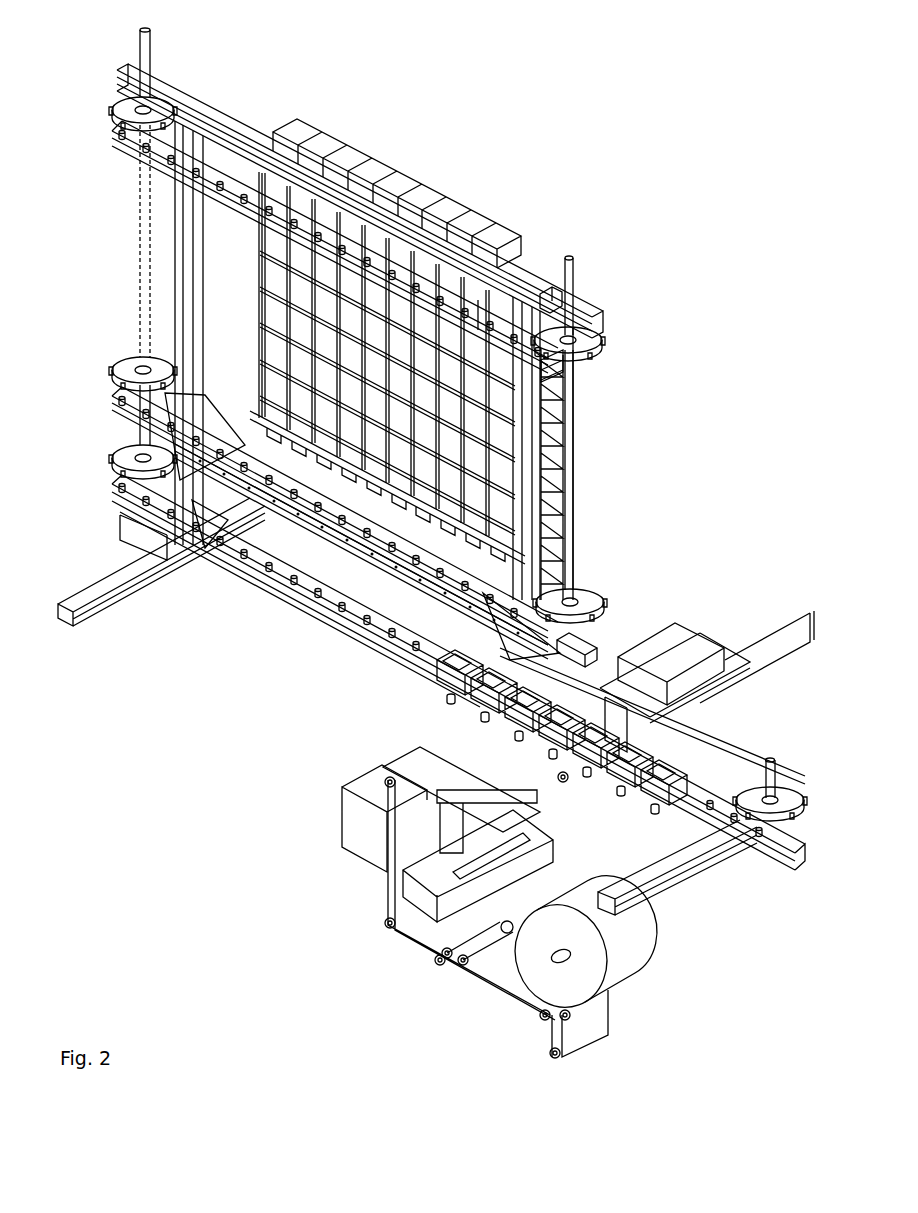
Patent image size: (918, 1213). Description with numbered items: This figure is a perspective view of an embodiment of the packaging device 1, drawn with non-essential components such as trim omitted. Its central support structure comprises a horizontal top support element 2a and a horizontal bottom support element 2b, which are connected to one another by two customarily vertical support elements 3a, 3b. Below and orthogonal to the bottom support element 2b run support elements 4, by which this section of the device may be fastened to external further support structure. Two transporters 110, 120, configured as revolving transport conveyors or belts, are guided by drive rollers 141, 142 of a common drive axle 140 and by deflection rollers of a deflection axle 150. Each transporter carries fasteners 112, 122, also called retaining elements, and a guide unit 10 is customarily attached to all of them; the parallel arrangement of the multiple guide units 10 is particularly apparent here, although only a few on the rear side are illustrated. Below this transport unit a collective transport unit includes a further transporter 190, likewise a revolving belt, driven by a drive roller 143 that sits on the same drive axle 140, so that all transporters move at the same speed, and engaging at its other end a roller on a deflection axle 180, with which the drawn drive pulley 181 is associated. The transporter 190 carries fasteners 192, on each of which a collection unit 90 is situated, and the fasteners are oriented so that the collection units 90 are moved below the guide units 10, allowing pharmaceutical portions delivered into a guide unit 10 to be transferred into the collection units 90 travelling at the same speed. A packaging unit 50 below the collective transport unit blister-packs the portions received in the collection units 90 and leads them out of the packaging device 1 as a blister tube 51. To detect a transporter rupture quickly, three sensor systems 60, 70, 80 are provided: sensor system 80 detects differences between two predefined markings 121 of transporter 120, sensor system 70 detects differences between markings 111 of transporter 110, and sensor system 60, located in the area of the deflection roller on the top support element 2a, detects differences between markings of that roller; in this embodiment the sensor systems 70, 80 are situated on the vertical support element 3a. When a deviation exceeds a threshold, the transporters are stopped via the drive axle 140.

The packaging device 1 is at (670, 144).
The horizontal top support element 2a is at (163, 92).
The horizontal bottom support element 2b is at (313, 610).
The vertical support element 3a is at (533, 481).
The vertical support element 3b is at (185, 147).
The support elements 4 is at (100, 605).
The guide unit 10 is at (305, 195).
The packaging unit 50 is at (358, 830).
The blister tube 51 is at (773, 648).
The sensor system 60 is at (553, 292).
The sensor system 70 is at (560, 378).
The sensor system 80 is at (573, 588).
The collection unit 90 is at (440, 688).
The transporter 110 is at (137, 136).
The predefined markings 111 is at (478, 315).
The fasteners 112 is at (298, 207).
The transporter 120 is at (123, 406).
The predefined markings 121 is at (213, 543).
The fasteners 122 is at (270, 540).
The drive axle 140 is at (140, 56).
The drive roller 141 is at (125, 110).
The drive roller 142 is at (125, 373).
The drive roller 143 is at (127, 468).
The deflection axle 150 is at (568, 425).
The deflection axle 180 is at (782, 783).
The drive pulley 181 is at (787, 810).
The transporter 190 is at (123, 497).
The fasteners 192 is at (340, 630).